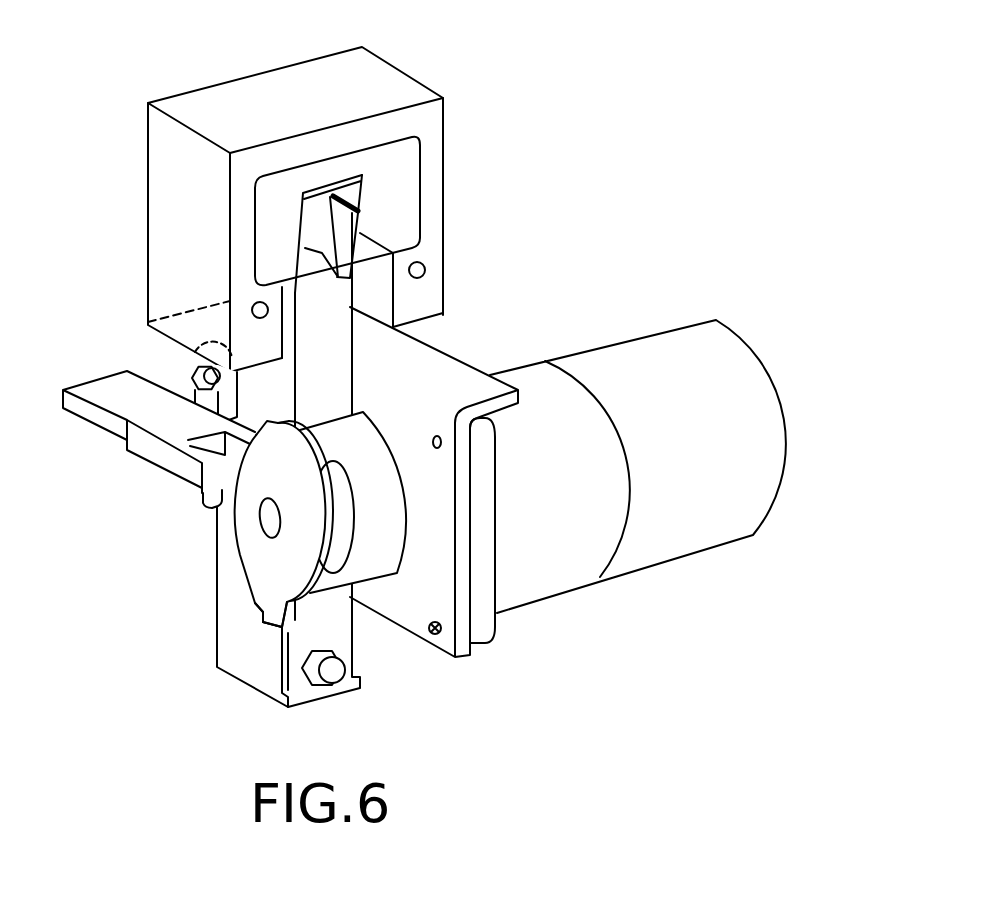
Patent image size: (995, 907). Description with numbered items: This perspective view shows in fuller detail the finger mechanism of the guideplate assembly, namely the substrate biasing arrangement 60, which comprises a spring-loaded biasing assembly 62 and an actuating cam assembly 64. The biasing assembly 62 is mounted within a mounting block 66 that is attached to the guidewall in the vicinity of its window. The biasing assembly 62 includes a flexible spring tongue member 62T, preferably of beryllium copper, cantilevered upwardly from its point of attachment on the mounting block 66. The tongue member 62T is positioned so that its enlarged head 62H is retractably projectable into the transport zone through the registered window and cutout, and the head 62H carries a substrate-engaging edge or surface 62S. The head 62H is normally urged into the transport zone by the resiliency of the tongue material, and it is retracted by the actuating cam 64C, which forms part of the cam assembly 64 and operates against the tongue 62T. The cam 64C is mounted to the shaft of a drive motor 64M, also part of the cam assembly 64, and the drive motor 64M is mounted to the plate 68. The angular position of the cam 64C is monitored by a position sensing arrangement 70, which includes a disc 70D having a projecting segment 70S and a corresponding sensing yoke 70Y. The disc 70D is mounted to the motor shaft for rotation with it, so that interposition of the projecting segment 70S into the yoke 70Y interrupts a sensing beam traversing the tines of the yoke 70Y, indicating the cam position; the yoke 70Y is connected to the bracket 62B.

The substrate biasing arrangement 60 is at (413, 385).
The spring-loaded biasing assembly 62 is at (277, 398).
The bracket 62B is at (390, 58).
The enlarged head 62H is at (357, 210).
The substrate-engaging edge or surface 62S is at (345, 235).
The flexible spring tongue member 62T is at (330, 345).
The actuating cam assembly 64 is at (453, 488).
The actuating cam 64C is at (382, 553).
The drive motor 64M is at (660, 560).
The mounting block 66 is at (301, 362).
The plate 68 is at (463, 645).
The position sensing arrangement 70 is at (186, 562).
The disc 70D is at (263, 540).
The projecting segment 70S is at (283, 597).
The sensing yoke 70Y is at (160, 457).